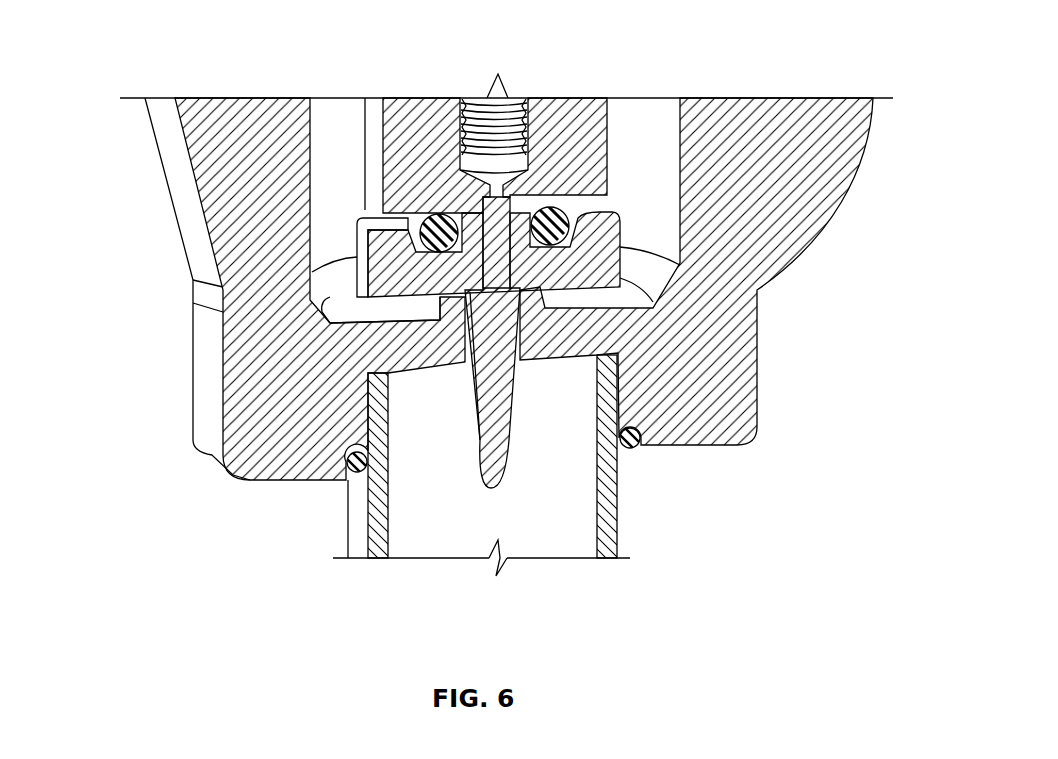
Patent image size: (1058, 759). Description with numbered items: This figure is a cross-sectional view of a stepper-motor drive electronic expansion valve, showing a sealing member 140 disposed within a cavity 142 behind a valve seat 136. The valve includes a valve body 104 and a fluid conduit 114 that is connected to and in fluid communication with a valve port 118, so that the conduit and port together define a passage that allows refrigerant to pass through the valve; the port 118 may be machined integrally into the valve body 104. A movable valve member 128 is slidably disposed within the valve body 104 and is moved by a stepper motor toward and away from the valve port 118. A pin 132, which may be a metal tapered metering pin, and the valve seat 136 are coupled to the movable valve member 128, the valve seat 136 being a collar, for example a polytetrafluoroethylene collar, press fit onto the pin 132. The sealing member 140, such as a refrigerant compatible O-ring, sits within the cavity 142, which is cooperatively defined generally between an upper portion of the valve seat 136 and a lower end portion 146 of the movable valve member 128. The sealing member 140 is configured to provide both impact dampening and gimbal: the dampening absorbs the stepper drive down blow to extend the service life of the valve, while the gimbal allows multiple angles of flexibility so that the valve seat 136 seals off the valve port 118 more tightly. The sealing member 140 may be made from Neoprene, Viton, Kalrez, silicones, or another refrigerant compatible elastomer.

The valve body 104 is at (207, 162).
The fluid conduit 114 is at (610, 513).
The valve port 118 is at (466, 372).
The movable valve member 128 is at (582, 122).
The pin 132 is at (505, 437).
The valve seat 136 is at (655, 290).
The sealing member 140 is at (552, 225).
The cavity 142 is at (345, 296).
The lower end portion 146 is at (407, 177).